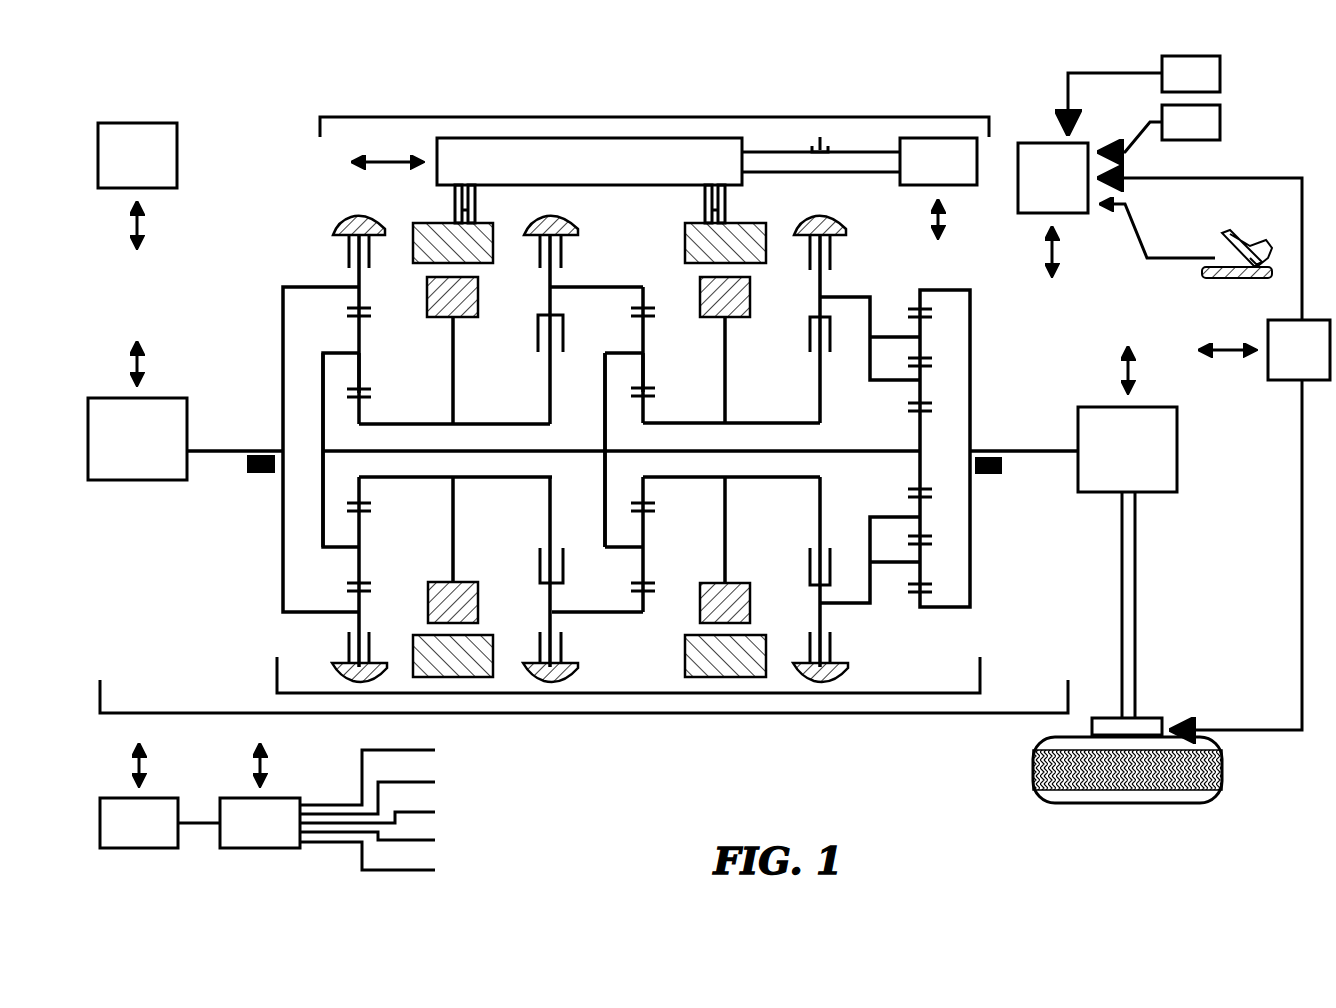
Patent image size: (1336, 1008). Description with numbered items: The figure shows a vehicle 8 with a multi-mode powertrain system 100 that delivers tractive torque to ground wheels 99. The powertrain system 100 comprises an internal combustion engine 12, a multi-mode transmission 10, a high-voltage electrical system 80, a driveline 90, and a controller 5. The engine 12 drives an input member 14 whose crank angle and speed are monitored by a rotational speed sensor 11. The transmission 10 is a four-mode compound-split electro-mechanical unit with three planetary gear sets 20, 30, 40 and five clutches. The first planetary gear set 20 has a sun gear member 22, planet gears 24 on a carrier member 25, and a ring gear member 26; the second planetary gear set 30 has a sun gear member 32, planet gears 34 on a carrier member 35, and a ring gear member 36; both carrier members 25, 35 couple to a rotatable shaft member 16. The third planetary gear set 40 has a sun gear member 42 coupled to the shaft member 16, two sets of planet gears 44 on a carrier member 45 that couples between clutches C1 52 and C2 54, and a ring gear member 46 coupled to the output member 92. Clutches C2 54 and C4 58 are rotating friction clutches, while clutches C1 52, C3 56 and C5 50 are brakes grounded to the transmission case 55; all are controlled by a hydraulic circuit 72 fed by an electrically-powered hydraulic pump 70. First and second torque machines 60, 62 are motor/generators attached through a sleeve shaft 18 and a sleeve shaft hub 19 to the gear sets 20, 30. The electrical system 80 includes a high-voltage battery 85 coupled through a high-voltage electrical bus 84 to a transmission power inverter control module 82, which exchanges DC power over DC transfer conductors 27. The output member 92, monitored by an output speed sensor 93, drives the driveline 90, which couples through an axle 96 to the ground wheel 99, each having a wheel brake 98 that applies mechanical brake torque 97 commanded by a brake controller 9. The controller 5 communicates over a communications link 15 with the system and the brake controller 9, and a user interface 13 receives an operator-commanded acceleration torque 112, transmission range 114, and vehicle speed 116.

The controller 5 is at (137, 155).
The vehicle 8 is at (812, 100).
The brake controller 9 is at (1299, 350).
The multi-mode transmission 10 is at (758, 694).
The rotational speed sensor 11 is at (260, 478).
The internal combustion engine 12 is at (137, 439).
The user interface 13 is at (1053, 178).
The input member 14 is at (226, 455).
The communications link 15 is at (680, 460).
The rotatable shaft member 16 is at (560, 449).
The sleeve shaft 18 is at (495, 418).
The sleeve shaft hub 19 is at (775, 418).
The first planetary gear set 20 is at (368, 491).
The sun gear member 22 is at (368, 397).
The planet gears 24 is at (362, 353).
The carrier member 25 is at (323, 425).
The ring gear member 26 is at (362, 308).
The DC transfer conductors 27 is at (475, 212).
The second planetary gear set 30 is at (647, 546).
The sun gear member 32 is at (652, 396).
The planet gears 34 is at (646, 353).
The carrier member 35 is at (605, 455).
The ring gear member 36 is at (646, 308).
The third planetary gear set 40 is at (905, 440).
The sun gear member 42 is at (925, 490).
The planet gears 44 is at (925, 523).
The carrier member 45 is at (880, 305).
The ring gear member 46 is at (912, 600).
The clutch C5 50 is at (347, 250).
The clutch C1 52 is at (833, 255).
The clutch C2 54 is at (809, 340).
The transmission case 55 is at (343, 224).
The clutch C3 56 is at (566, 250).
The clutch C4 58 is at (536, 340).
The first torque machine 60 is at (475, 268).
The second torque machine 62 is at (748, 270).
The electrically-powered hydraulic pump 70 is at (139, 823).
The hydraulic circuit 72 is at (320, 813).
The high-voltage electrical system 80 is at (665, 117).
The transmission power inverter control module 82 is at (589, 161).
The high-voltage electrical bus 84 is at (855, 150).
The high-voltage battery 85 is at (859, 161).
The driveline 90 is at (1127, 449).
The output member 92 is at (1030, 447).
The transmission output speed sensor 93 is at (1002, 467).
The axle 96 is at (1137, 598).
The mechanical brake torque 97 is at (1201, 454).
The wheel brake 98 is at (1165, 722).
The ground wheel 99 is at (1225, 772).
The multi-mode powertrain system 100 is at (663, 713).
The operator-commanded acceleration torque 112 is at (1225, 262).
The operator-commanded transmission range 114 is at (1160, 128).
The operator-commanded vehicle speed 116 is at (1144, 94).